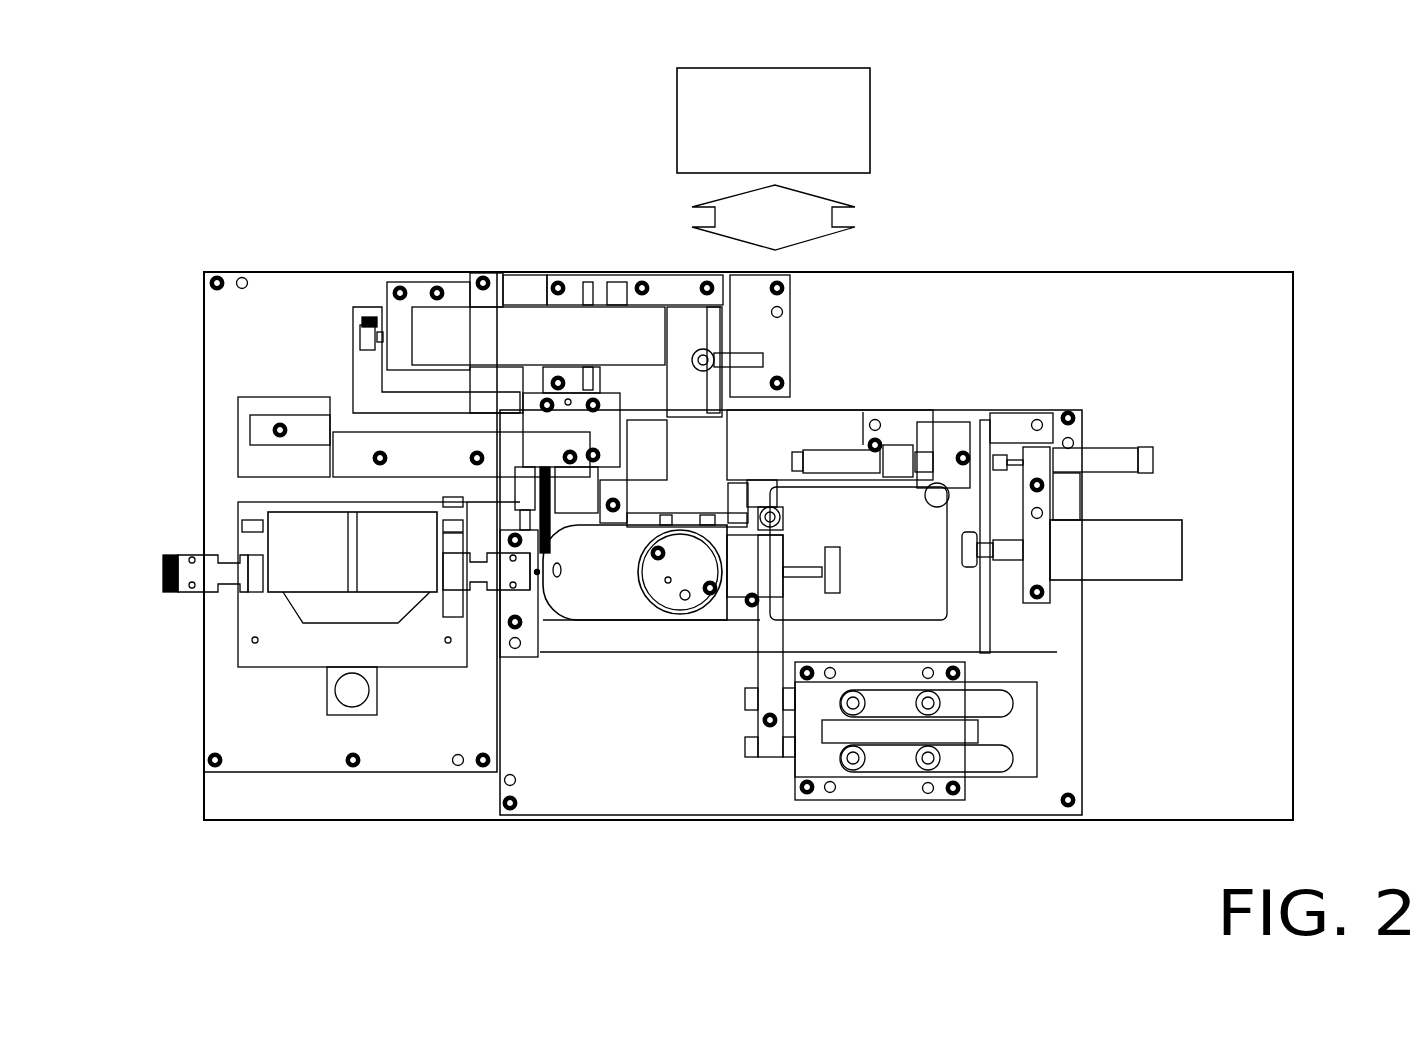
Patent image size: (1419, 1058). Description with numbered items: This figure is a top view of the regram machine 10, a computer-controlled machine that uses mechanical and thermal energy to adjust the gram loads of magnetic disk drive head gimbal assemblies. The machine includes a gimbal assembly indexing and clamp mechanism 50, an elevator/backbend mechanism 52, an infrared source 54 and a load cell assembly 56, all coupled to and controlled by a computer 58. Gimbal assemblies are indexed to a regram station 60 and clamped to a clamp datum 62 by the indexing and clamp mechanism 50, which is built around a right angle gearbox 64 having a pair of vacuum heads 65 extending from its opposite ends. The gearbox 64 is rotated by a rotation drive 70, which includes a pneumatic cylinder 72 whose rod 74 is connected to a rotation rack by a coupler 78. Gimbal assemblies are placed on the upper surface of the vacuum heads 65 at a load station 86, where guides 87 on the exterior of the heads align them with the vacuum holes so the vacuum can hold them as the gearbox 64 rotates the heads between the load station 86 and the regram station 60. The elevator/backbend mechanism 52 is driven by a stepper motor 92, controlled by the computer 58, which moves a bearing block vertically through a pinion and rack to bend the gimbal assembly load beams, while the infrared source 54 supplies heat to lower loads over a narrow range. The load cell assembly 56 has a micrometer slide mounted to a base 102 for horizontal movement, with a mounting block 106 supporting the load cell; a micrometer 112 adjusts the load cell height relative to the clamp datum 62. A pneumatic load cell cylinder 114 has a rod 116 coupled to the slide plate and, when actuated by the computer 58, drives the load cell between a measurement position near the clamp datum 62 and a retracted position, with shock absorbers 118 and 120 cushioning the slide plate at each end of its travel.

The regram machine 10 is at (1075, 225).
The gimbal assembly indexing and clamp mechanism 50 is at (260, 513).
The elevator/backbend mechanism 52 is at (520, 478).
The infrared source 54 is at (648, 523).
The load cell assembly 56 is at (806, 425).
The computer 58 is at (873, 117).
The regram station 60 is at (523, 595).
The clamp datum 62 is at (532, 658).
The right angle gearbox 64 is at (295, 550).
The vacuum heads 65 is at (183, 587).
The rotation drive 70 is at (278, 455).
The pneumatic cylinder 72 is at (432, 328).
The rod 74 is at (366, 325).
The coupler 78 is at (368, 375).
The load station 86 is at (163, 542).
The guides 87 is at (158, 560).
The stepper motor 92 is at (693, 317).
The base 102 is at (1148, 780).
The mounting block 106 is at (737, 507).
The micrometer 112 is at (787, 513).
The pneumatic load cell cylinder 114 is at (1080, 565).
The rod 116 is at (1003, 565).
The shock absorber 118 is at (1113, 460).
The shock absorber 120 is at (847, 450).